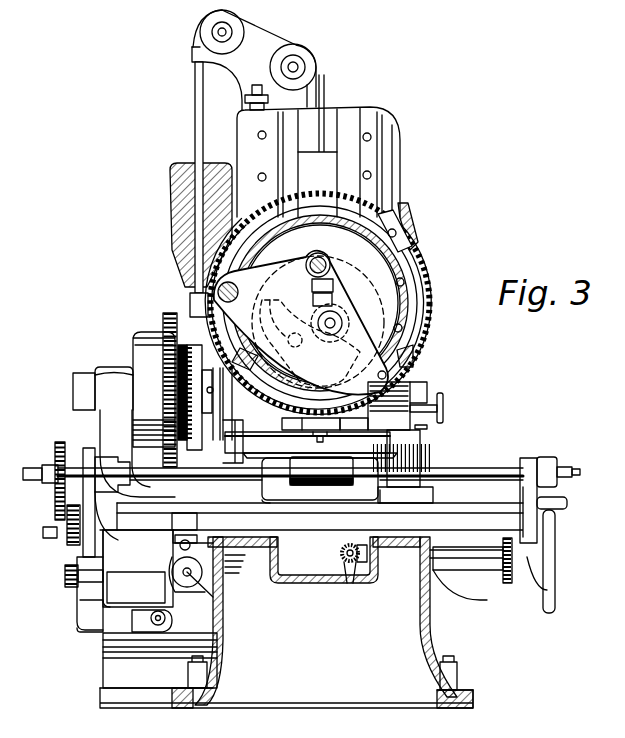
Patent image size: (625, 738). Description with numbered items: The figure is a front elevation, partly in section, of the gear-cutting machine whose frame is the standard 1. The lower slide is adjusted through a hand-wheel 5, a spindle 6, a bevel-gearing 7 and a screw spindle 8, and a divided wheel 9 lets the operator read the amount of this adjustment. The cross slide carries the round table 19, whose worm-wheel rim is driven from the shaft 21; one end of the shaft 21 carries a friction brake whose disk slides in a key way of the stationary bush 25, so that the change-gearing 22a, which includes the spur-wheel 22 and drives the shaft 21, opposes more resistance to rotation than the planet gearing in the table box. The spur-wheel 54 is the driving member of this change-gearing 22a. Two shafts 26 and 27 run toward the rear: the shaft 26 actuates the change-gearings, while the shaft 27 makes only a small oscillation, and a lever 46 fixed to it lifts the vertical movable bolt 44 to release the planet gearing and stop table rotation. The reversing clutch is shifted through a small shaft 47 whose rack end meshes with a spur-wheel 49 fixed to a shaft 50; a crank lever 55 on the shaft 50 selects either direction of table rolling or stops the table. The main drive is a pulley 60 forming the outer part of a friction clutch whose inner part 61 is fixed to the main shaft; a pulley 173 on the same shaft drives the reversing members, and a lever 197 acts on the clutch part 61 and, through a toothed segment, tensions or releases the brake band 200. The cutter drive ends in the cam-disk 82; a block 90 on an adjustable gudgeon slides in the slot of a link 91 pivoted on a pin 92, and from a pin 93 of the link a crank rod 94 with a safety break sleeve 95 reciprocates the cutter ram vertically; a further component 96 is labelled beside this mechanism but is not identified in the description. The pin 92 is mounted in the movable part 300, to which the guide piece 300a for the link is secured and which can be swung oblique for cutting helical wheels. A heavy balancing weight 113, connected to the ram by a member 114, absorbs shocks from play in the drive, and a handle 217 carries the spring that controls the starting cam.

The standard 1 is at (431, 637).
The hand-wheel 5 is at (556, 588).
The spindle 6 is at (407, 559).
The bevel-gearing 7 is at (351, 570).
The screw spindle 8 is at (342, 555).
The wheel 9 is at (507, 572).
The round table 19 is at (421, 441).
The shaft 21 is at (472, 469).
The spur-wheel 22 is at (58, 443).
The change-gearing 22a is at (57, 518).
The stationary bush 25 is at (556, 458).
The shaft 26 is at (210, 598).
The shaft 27 is at (205, 641).
The vertical movable bolt 44 is at (180, 550).
The lever 46 is at (157, 620).
The small shaft 47 is at (182, 536).
The spur-wheel 49 is at (180, 546).
The shaft 50 is at (262, 552).
The spur-wheel 54 is at (63, 573).
The crank lever 55 is at (558, 515).
The pulley 60 is at (143, 332).
The inner part of friction clutch 61 is at (195, 322).
The cam-disk 82 is at (345, 262).
The block 90 is at (273, 317).
The link 91 is at (315, 305).
The pin 92 is at (228, 282).
The pin 93 is at (336, 321).
The crank rod 94 is at (333, 303).
The safety break sleeve 95 is at (334, 292).
The stud 96 is at (318, 253).
The balancing weight 113 is at (170, 204).
The member 114 is at (319, 86).
The pulley 173 is at (83, 373).
The lever 197 is at (213, 392).
The brake band 200 is at (193, 425).
The handle 217 is at (445, 407).
The movable part 300 is at (398, 195).
The guide piece 300a is at (402, 320).